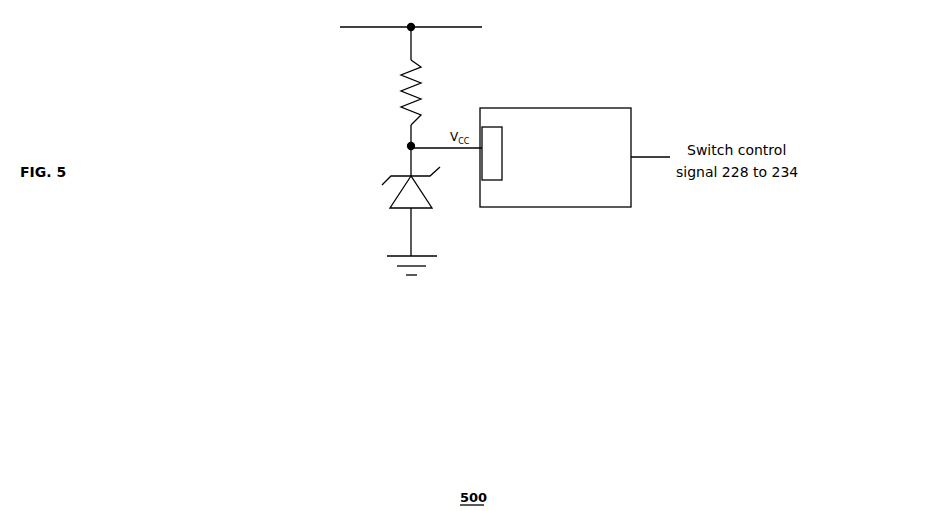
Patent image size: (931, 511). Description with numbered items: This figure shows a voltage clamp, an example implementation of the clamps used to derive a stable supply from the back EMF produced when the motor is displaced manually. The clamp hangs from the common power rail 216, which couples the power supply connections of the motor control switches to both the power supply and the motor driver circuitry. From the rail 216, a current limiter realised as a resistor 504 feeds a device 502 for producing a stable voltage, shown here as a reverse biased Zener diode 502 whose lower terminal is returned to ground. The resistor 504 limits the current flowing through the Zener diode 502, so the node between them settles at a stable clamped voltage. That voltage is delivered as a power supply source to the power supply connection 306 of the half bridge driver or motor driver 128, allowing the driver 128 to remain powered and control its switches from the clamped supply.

The common power rail 216 is at (330, 26).
The resistor 504 is at (391, 84).
The Zener diode 502 is at (380, 192).
The driver 128 is at (557, 108).
The power supply connection 306 is at (488, 126).